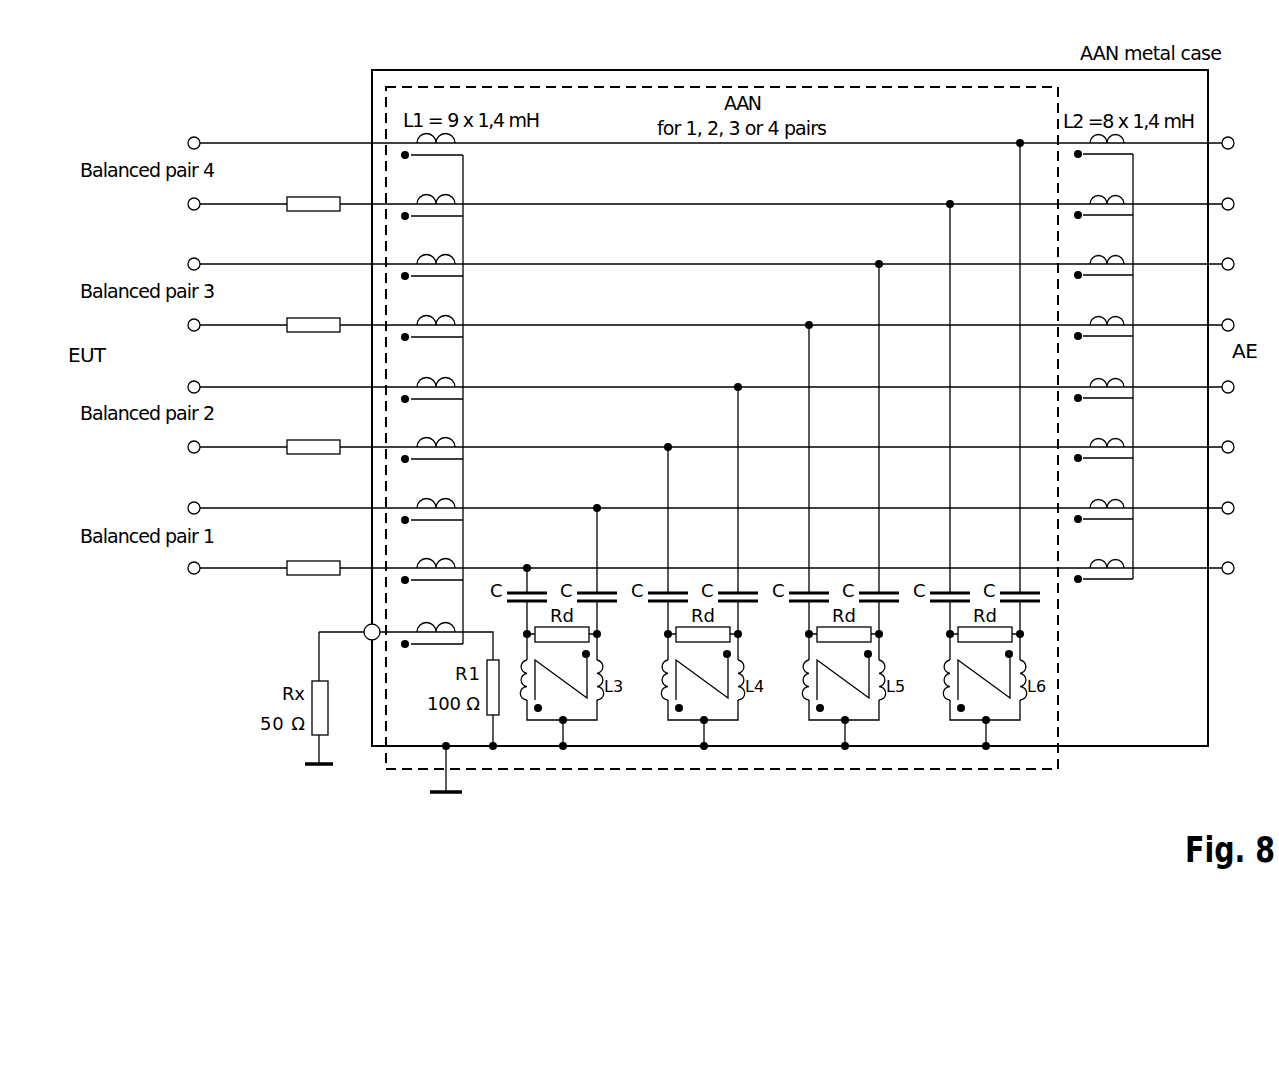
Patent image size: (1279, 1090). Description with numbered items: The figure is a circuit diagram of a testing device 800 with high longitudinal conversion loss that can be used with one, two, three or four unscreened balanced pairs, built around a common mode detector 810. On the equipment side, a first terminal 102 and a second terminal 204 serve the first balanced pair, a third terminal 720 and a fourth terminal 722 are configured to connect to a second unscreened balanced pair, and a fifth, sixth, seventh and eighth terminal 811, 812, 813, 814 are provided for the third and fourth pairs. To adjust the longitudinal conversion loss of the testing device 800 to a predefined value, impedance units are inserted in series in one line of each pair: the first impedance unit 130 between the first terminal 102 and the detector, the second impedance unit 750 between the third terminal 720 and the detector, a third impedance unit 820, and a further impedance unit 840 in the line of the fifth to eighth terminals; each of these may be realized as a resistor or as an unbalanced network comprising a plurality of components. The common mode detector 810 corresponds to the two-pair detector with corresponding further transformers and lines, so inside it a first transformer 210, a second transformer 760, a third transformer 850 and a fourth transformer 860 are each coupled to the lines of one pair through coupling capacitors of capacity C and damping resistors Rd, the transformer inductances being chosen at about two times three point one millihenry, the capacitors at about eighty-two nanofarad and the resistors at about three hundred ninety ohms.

The testing device 800 is at (258, 83).
The common mode detector 810 is at (1027, 770).
The eighth terminal 814 is at (187, 143).
The seventh terminal 813 is at (187, 204).
The sixth terminal 812 is at (187, 264).
The fifth terminal 811 is at (187, 325).
The fourth terminal 722 is at (187, 387).
The third terminal 720 is at (187, 447).
The second terminal 204 is at (187, 508).
The first terminal 102 is at (187, 568).
The Zcat impedance element of pair 4 840 is at (287, 208).
The third impedance unit 820 is at (287, 329).
The second impedance unit 750 is at (287, 451).
The first impedance unit 130 is at (287, 572).
The first transformer 210 is at (585, 720).
The second transformer 760 is at (726, 720).
The third transformer 850 is at (867, 720).
The fourth transformer 860 is at (1008, 720).